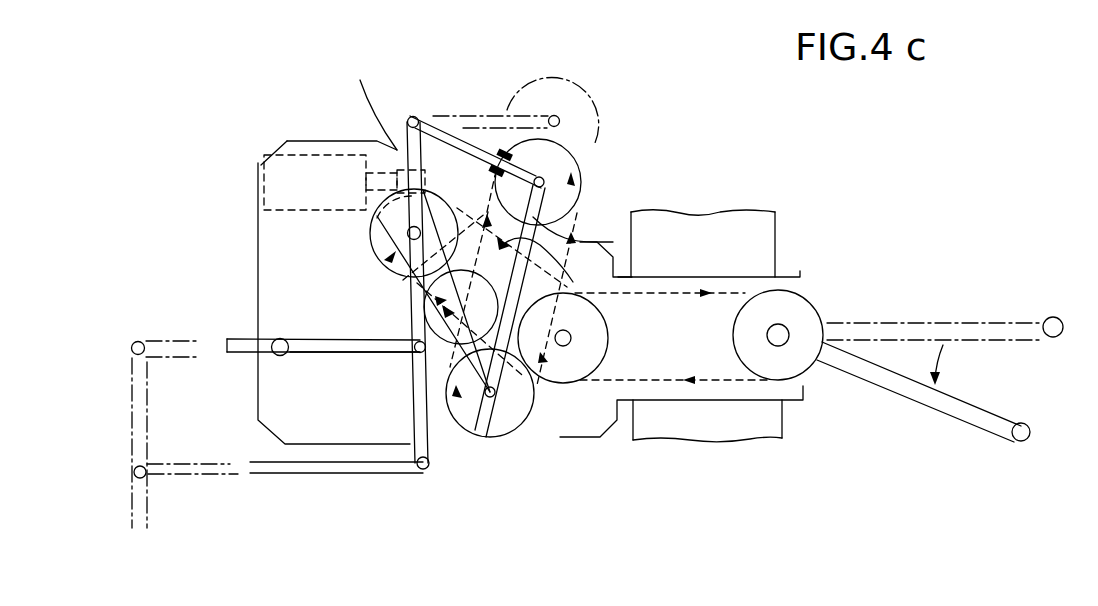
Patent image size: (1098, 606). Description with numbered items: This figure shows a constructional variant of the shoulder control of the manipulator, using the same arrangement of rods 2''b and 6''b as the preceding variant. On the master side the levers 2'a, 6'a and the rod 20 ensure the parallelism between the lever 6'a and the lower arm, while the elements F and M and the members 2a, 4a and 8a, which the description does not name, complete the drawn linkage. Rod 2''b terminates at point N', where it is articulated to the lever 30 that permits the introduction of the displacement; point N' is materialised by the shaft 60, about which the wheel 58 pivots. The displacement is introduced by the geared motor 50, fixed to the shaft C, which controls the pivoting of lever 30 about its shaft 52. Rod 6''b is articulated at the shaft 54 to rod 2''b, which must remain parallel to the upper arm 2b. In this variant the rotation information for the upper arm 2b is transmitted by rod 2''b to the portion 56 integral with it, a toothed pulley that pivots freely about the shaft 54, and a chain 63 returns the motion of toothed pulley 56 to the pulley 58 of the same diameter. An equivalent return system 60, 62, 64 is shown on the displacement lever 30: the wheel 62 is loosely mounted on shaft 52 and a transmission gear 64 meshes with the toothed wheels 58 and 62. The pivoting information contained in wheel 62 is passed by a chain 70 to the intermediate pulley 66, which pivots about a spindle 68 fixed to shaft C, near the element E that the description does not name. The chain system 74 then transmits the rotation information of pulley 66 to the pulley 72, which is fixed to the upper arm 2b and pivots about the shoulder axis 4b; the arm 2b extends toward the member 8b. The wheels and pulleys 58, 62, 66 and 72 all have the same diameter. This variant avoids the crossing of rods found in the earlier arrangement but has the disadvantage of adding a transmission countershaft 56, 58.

The frame F is at (321, 141).
The geared motor 50 is at (264, 157).
The pivot link M is at (413, 117).
The rod 2''b is at (504, 116).
The shaft 54 is at (580, 168).
The toothed pulley portion 56 is at (582, 180).
The chain 63 is at (578, 224).
The rod 6''b is at (647, 237).
The chain 70 is at (562, 278).
The processing station E is at (742, 213).
The chain system 74 is at (733, 287).
The shaft C is at (715, 402).
The shaft 52 is at (373, 242).
The wheel 62 is at (398, 273).
The transmission gear 64 is at (437, 323).
The wheel 58 is at (480, 433).
The point N' is at (508, 438).
The shaft 60 is at (496, 394).
The intermediate pulley 66 is at (587, 316).
The spindle 68 is at (567, 340).
The link bar 2a is at (221, 350).
The lever 2'a is at (352, 379).
The pivot 4a is at (280, 338).
The pivot point 8a is at (133, 343).
The rod 20 is at (320, 472).
The lever 30 is at (463, 440).
The shoulder axis 4b is at (779, 333).
The pulley 72 is at (812, 366).
The upper arm 2b is at (960, 408).
The pivot point 8b is at (1022, 423).
The lever 6'a is at (371, 98).